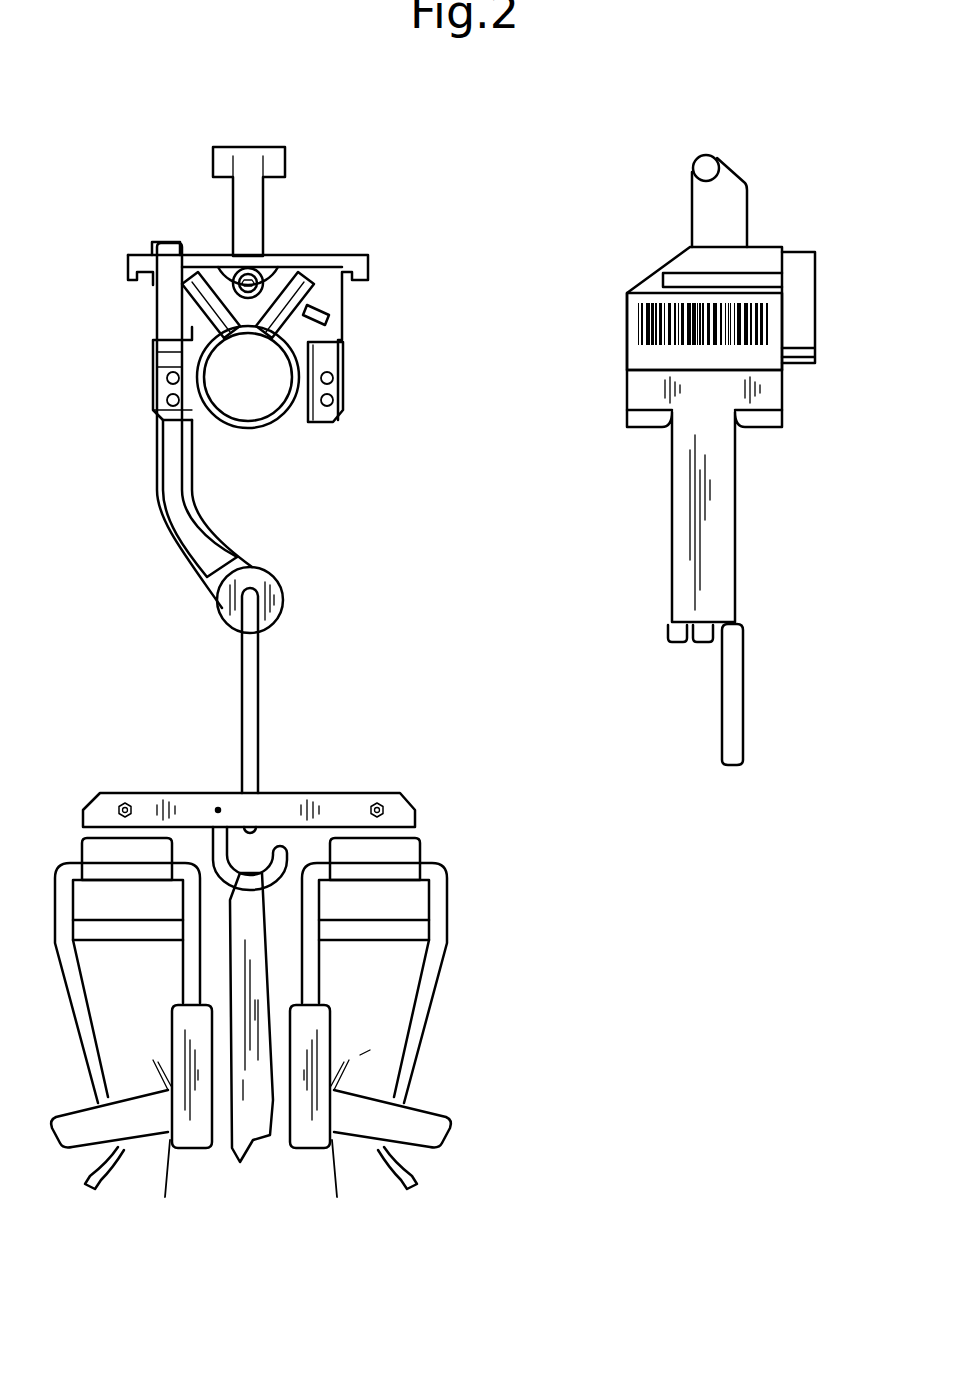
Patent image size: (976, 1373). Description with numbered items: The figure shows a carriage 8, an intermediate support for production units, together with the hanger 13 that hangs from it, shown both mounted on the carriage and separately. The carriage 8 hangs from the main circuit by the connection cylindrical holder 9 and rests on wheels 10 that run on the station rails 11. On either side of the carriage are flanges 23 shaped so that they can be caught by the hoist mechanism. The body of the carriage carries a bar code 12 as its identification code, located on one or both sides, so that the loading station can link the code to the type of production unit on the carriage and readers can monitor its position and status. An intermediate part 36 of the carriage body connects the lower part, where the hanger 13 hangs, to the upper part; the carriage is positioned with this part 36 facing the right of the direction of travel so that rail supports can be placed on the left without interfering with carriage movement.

The carriage 8 is at (338, 388).
The connection cylindrical holder 9 is at (272, 155).
The wheels 10 is at (293, 308).
The station rails 11 is at (287, 352).
The bar code 12 is at (743, 323).
The hanger 13 is at (257, 693).
The flanges 23 is at (362, 265).
The intermediate part of the carriage body 36 is at (175, 463).